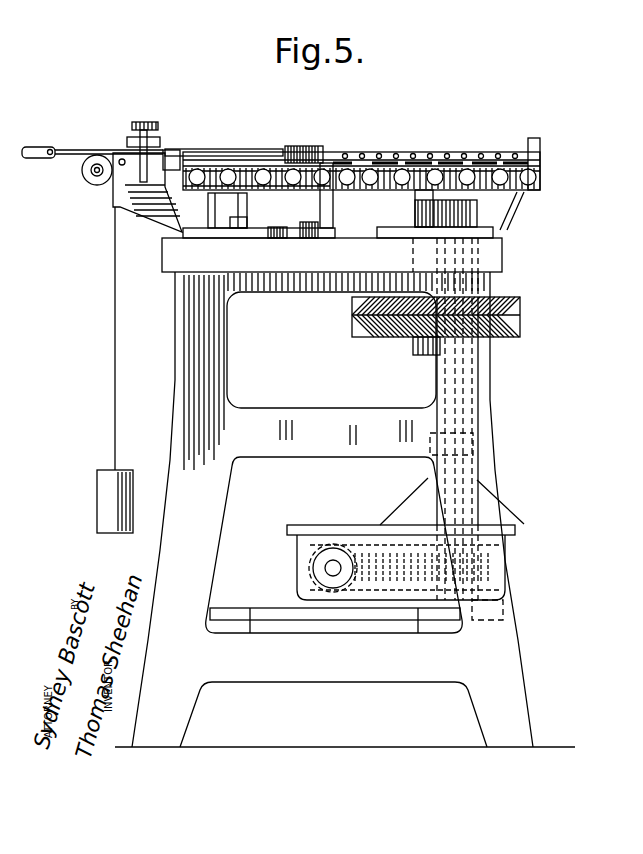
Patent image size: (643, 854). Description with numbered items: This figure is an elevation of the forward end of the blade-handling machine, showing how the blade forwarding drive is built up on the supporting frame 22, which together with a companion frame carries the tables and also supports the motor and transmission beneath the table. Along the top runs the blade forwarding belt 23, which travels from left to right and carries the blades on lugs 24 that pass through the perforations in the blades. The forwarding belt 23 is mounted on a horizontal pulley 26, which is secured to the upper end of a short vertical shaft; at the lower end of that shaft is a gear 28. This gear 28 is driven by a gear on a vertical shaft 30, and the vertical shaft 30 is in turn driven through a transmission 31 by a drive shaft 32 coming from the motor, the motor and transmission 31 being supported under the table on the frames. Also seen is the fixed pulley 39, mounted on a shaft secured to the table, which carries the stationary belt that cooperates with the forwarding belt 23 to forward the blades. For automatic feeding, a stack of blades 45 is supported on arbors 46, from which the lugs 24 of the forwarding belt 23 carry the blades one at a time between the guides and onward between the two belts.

The frame 22 is at (233, 346).
The blade forwarding belt 23 is at (417, 150).
The lugs 24 is at (353, 153).
The horizontal pulley 26 is at (536, 192).
The gear 28 is at (522, 328).
The vertical shaft 30 is at (463, 405).
The transmission 31 is at (528, 527).
The drive shaft 32 is at (326, 569).
The fixed pulley 39 is at (258, 190).
The stack of blades 45 is at (312, 148).
The arbors 46 is at (248, 152).